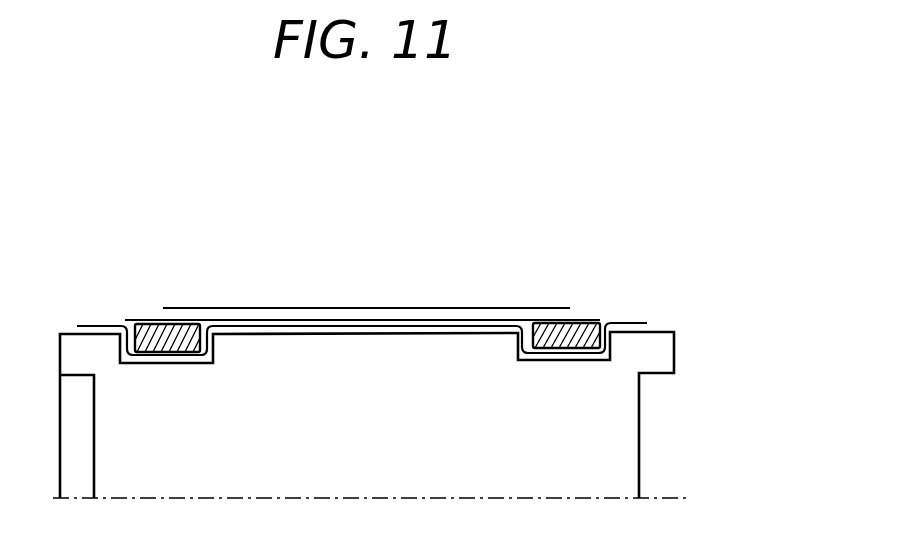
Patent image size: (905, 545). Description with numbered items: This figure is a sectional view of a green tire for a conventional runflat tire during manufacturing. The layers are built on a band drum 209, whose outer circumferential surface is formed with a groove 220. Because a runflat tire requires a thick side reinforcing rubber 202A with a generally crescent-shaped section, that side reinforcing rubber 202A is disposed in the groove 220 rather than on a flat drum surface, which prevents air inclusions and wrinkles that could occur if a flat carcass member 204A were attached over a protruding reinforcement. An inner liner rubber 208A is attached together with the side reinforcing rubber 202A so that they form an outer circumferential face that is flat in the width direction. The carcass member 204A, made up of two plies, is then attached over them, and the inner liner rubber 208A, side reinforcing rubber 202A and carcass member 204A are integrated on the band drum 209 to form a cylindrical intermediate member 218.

The band drum 209 is at (615, 427).
The groove 220 is at (175, 363).
The cylindrical intermediate member 218 is at (795, 195).
The carcass member 204A is at (588, 322).
The side reinforcing rubber 202A is at (596, 320).
The inner liner rubber 208A is at (652, 331).